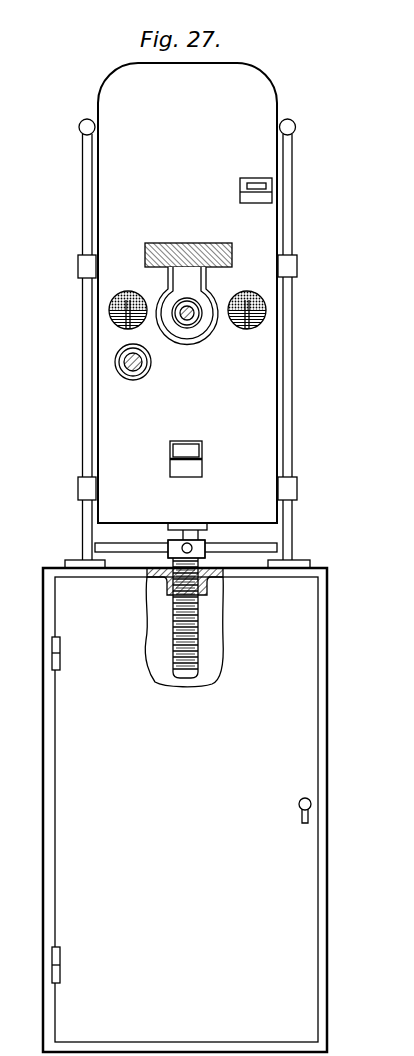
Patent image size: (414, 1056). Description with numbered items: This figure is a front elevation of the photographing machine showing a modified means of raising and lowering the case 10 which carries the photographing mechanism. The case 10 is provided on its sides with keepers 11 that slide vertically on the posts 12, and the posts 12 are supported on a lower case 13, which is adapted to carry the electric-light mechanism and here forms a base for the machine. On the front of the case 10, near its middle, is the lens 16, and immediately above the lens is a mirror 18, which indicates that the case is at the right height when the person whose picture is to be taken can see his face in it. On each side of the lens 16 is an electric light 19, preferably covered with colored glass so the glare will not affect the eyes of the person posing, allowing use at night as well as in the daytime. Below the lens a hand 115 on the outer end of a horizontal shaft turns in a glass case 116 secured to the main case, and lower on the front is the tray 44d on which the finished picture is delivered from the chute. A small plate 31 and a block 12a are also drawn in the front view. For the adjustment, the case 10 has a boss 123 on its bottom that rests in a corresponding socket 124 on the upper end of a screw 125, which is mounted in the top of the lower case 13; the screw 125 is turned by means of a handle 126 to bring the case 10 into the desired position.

The case 10 is at (187, 293).
The keepers 11 is at (78, 268).
The posts 12 is at (82, 381).
The block on cross bar 12a is at (206, 549).
The case 13 is at (185, 810).
The lens 16 is at (191, 338).
The mirror 18 is at (196, 244).
The electric light 19 is at (122, 292).
The slot plate 31 is at (243, 180).
The tray 44d is at (181, 462).
The hand 115 is at (124, 376).
The glass case 116 is at (145, 377).
The boss 123 is at (187, 539).
The socket 124 is at (168, 542).
The screw 125 is at (176, 630).
The handle 126 is at (252, 553).